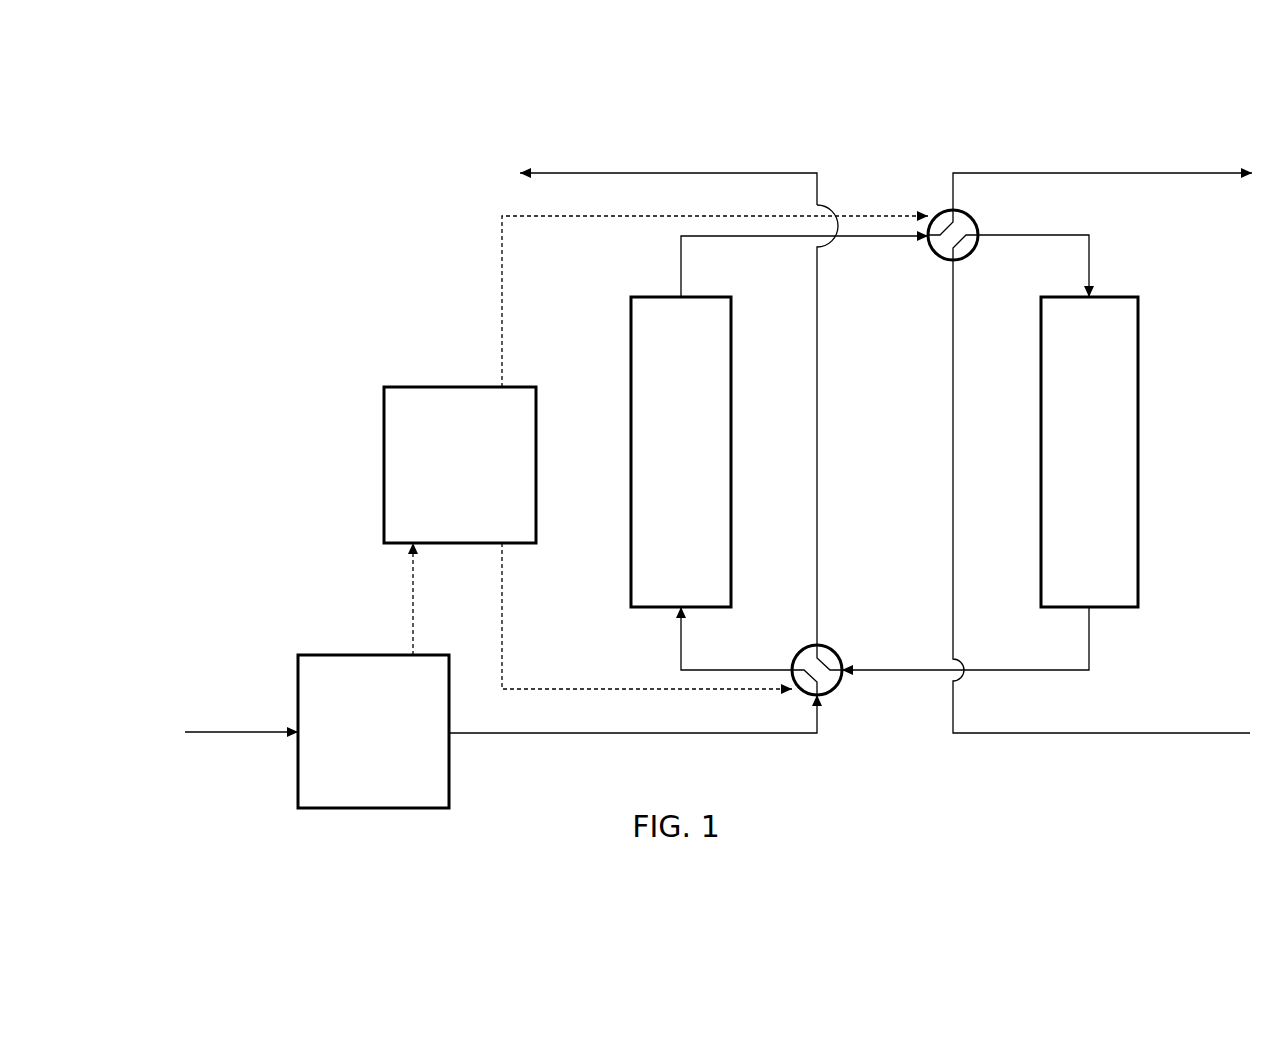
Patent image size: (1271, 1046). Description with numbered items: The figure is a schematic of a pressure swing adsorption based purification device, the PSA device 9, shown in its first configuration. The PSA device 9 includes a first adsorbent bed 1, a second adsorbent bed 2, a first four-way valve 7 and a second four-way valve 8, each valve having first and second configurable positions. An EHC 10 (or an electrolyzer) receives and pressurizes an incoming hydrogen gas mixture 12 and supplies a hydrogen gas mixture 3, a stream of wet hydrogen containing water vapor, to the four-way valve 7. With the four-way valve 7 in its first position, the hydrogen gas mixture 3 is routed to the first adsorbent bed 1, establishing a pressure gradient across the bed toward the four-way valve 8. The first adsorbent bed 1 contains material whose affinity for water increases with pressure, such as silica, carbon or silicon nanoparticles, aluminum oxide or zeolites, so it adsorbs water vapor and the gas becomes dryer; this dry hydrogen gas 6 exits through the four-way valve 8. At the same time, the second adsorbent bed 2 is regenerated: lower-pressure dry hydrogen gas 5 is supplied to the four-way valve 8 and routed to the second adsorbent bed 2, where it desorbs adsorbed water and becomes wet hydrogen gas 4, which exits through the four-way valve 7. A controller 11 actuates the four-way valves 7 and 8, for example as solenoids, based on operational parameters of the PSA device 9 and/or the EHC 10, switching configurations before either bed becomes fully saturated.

The first adsorbent bed 1 is at (673, 471).
The second adsorbent bed 2 is at (1081, 471).
The hydrogen gas mixture 3 is at (561, 734).
The wet hydrogen gas 4 is at (578, 173).
The dry hydrogen gas 5 is at (1215, 734).
The dry hydrogen gas 6 is at (1235, 172).
The first four-way valve 7 is at (834, 652).
The second four-way valve 8 is at (971, 253).
The PSA device 9 is at (478, 133).
The EHC 10 is at (361, 738).
The controller 11 is at (449, 471).
The hydrogen gas mixture 12 is at (216, 731).